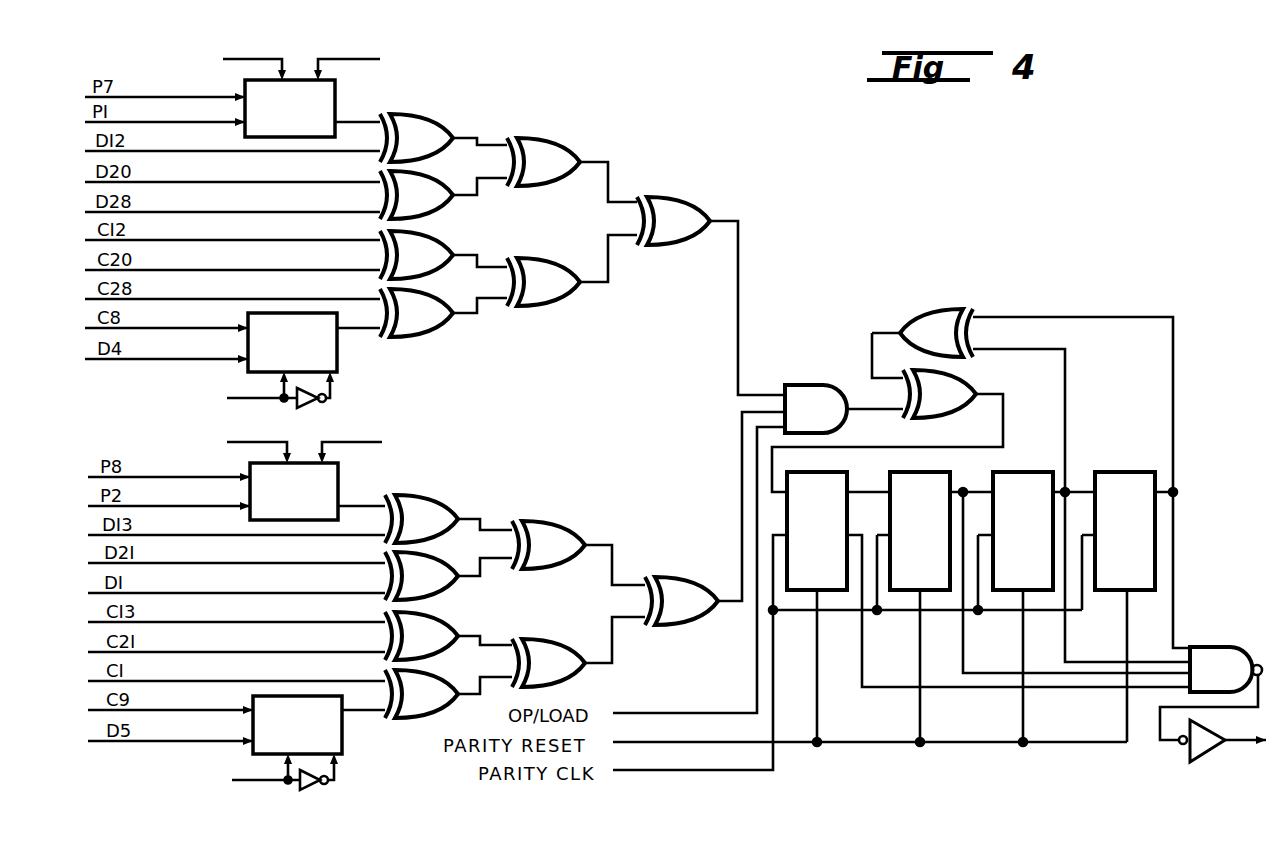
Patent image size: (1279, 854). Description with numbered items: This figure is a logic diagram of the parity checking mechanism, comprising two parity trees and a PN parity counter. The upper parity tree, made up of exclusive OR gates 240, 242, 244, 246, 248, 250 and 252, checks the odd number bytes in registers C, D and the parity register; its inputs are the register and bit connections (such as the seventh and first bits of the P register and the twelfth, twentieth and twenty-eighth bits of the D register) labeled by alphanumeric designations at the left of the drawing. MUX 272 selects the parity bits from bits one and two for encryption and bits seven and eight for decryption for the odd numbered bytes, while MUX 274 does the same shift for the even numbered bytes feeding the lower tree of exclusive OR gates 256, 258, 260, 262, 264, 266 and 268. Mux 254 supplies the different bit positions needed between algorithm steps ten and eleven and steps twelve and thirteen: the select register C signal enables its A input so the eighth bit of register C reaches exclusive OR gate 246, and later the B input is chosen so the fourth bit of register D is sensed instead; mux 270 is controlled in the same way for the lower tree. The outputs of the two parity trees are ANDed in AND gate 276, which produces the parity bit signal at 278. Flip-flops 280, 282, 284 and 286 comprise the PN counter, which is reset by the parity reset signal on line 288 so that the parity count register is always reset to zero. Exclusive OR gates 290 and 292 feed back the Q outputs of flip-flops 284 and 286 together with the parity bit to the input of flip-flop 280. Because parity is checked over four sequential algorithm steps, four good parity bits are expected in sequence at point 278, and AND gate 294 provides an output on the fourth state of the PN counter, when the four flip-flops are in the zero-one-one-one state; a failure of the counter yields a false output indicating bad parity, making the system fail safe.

The exclusive OR gate 240 is at (432, 118).
The exclusive OR gate 242 is at (448, 206).
The exclusive OR gate 244 is at (448, 250).
The exclusive OR gate 246 is at (448, 330).
The exclusive OR gate 248 is at (556, 140).
The exclusive OR gate 250 is at (570, 294).
The exclusive OR gate 252 is at (688, 207).
The mux 254 is at (339, 350).
The exclusive OR gate 256 is at (438, 496).
The exclusive OR gate 258 is at (452, 583).
The exclusive OR gate 260 is at (454, 628).
The exclusive OR gate 262 is at (445, 714).
The exclusive OR gate 264 is at (566, 523).
The exclusive OR gate 266 is at (576, 674).
The exclusive OR gate 268 is at (675, 580).
The mux 270 is at (344, 742).
The MUX 272 is at (338, 102).
The MUX 274 is at (340, 484).
The AND gate 276 is at (818, 384).
The parity bit signal 278 is at (870, 413).
The flip-flop 280 is at (787, 506).
The flip-flop 282 is at (902, 588).
The flip-flop 284 is at (1004, 588).
The flip-flop 286 is at (1107, 588).
The parity reset line 288 is at (860, 746).
The exclusive OR gate 290 is at (966, 374).
The exclusive OR gate 292 is at (927, 318).
The AND gate 294 is at (1252, 647).